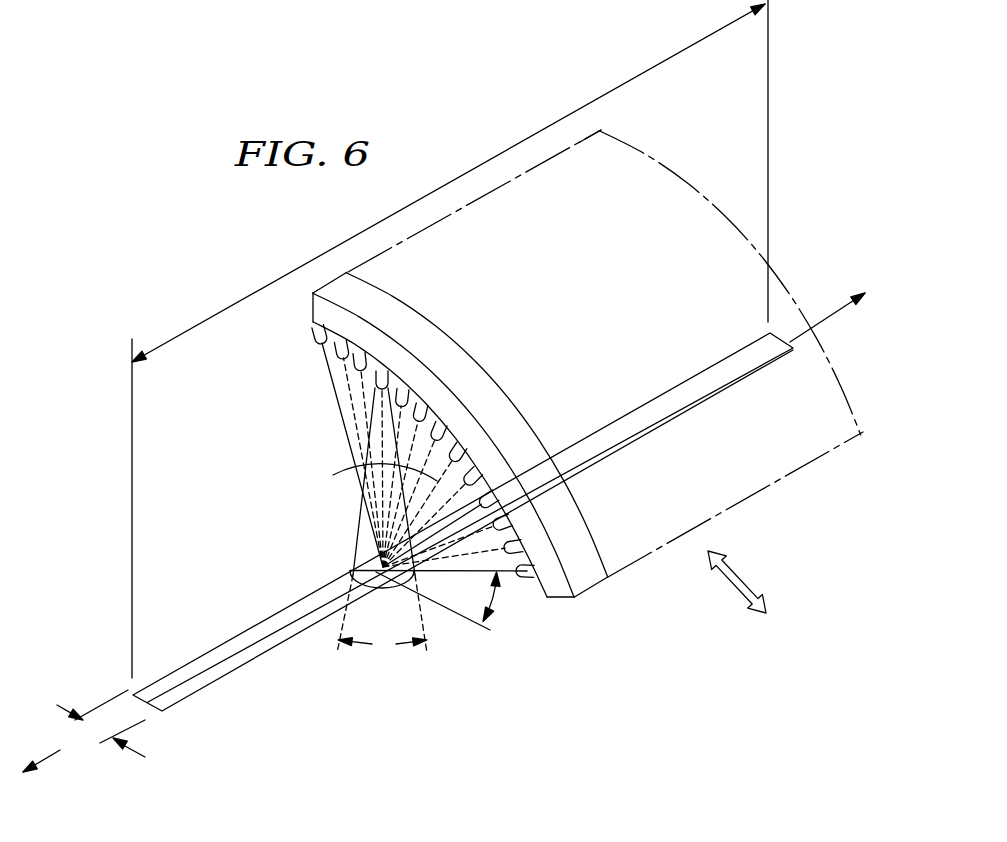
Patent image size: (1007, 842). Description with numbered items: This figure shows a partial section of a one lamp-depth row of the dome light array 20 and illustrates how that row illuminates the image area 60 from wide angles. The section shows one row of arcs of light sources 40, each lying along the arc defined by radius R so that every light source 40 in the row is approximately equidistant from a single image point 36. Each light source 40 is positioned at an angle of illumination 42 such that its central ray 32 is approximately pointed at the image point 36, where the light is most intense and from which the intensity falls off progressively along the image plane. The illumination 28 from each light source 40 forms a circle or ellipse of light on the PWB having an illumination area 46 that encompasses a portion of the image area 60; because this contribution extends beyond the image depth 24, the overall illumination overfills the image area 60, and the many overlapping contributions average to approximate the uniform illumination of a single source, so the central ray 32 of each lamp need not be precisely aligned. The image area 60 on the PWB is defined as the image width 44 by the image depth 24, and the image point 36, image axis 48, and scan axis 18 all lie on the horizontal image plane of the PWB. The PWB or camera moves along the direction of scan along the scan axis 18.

The dome light array 20 is at (413, 326).
The light source 40 is at (316, 338).
The radius R is at (339, 410).
The illumination 28 is at (363, 523).
The central ray 32 is at (334, 476).
The image point 36 is at (366, 568).
The illumination area 46 is at (382, 660).
The angle of illumination 42 is at (493, 604).
The image area 60 is at (224, 657).
The image width 44 is at (683, 50).
The image axis 48 is at (842, 309).
The image depth 24 is at (166, 732).
The scan axis 18 is at (787, 570).